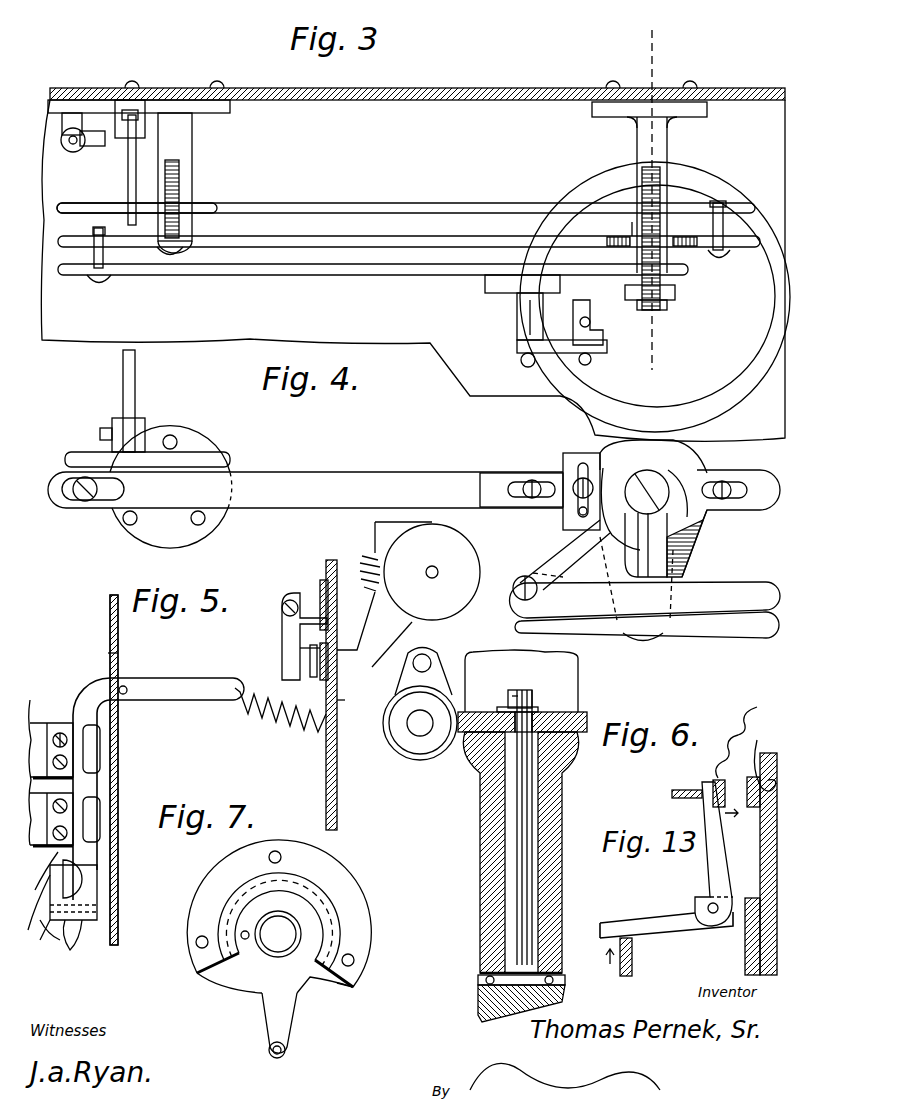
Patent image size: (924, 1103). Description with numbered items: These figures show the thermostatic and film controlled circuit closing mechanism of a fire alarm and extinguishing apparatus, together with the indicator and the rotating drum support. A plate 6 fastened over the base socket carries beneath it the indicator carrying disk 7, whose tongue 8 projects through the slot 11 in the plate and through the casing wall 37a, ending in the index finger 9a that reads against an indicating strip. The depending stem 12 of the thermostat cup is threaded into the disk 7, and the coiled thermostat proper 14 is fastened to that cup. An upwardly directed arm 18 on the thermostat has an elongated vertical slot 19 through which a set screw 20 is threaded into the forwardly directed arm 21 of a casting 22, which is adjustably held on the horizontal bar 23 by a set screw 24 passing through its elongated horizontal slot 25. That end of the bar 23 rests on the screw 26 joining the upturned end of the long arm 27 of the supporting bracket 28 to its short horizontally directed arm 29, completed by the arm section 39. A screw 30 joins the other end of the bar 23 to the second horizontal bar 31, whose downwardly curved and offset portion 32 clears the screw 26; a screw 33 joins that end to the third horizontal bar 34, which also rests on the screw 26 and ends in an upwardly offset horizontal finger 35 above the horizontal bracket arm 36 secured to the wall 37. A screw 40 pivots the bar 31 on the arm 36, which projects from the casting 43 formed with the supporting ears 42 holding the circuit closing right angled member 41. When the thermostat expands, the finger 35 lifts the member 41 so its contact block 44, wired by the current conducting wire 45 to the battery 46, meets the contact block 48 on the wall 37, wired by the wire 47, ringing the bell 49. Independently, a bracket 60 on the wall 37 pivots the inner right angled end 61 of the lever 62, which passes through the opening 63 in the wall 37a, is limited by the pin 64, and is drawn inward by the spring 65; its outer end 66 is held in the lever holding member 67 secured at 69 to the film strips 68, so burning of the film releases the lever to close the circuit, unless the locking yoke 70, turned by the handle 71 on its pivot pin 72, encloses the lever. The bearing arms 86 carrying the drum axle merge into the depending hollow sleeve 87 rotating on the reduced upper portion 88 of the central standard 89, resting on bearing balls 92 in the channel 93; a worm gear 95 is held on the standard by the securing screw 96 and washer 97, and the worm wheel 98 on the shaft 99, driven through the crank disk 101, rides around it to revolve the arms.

In FIG. 7, the plate 6 is at (230, 865).
In FIG. 7, the indicator carrying disk 7 is at (243, 905).
In FIG. 7, the tongue 8 is at (277, 1010).
In FIG. 7, the index finger 9a is at (283, 1058).
In FIG. 7, the slot 11 is at (340, 983).
In FIG. 3, the depending stem 12 is at (653, 203).
In FIG. 3, the thermostat proper 14 is at (722, 402).
In FIG. 4, the thermostat proper 14 is at (700, 596).
In FIG. 3, the upwardly directed arm 18 is at (592, 362).
In FIG. 4, the upwardly directed arm 18 is at (548, 560).
In FIG. 4, the elongated vertical slot 19 is at (581, 515).
In FIG. 3, the set screw 20 is at (528, 367).
In FIG. 4, the set screw 20 is at (575, 497).
In FIG. 3, the forwardly directed arm 21 is at (517, 345).
In FIG. 3, the casting 22 is at (487, 285).
In FIG. 4, the casting 22 is at (495, 482).
In FIG. 3, the horizontal bar 23 is at (284, 276).
In FIG. 4, the horizontal bar 23 is at (298, 482).
In FIG. 3, the set screw 24 is at (518, 318).
In FIG. 4, the set screw 24 is at (537, 479).
In FIG. 4, the elongated horizontal slot 25 is at (528, 499).
In FIG. 3, the screw 26 is at (660, 232).
In FIG. 3, the arm 27 is at (645, 308).
In FIG. 4, the arm 27 is at (644, 478).
In FIG. 3, the supporting bracket 28 is at (704, 117).
In FIG. 4, the supporting bracket 28 is at (605, 446).
In FIG. 3, the short horizontally directed arm 29 is at (637, 140).
In FIG. 3, the screw 30 is at (92, 278).
In FIG. 4, the screw 30 is at (88, 501).
In FIG. 3, the second horizontal bar 31 is at (282, 240).
In FIG. 3, the downwardly curved and offset portion 32 is at (680, 285).
In FIG. 4, the downwardly curved and offset portion 32 is at (690, 515).
In FIG. 3, the screw 33 is at (719, 262).
In FIG. 4, the screw 33 is at (724, 480).
In FIG. 3, the third horizontal bar 34 is at (400, 210).
In FIG. 3, the upwardly offset horizontal finger 35 is at (197, 206).
In FIG. 4, the upwardly offset horizontal finger 35 is at (218, 455).
In FIG. 13, the upwardly offset horizontal finger 35 is at (633, 950).
In FIG. 3, the horizontal bracket arm 36 is at (180, 154).
In FIG. 3, the wall 37 is at (417, 83).
In FIG. 5, the wall 37 is at (337, 802).
In FIG. 13, the wall 37 is at (780, 864).
In FIG. 5, the wall 37a is at (118, 774).
In FIG. 3, the arm section 39 is at (632, 232).
In FIG. 3, the screw 40 is at (181, 258).
In FIG. 3, the circuit closing right angled member 41 is at (128, 172).
In FIG. 4, the circuit closing right angled member 41 is at (123, 393).
In FIG. 5, the circuit closing right angled member 41 is at (310, 665).
In FIG. 13, the circuit closing right angled member 41 is at (698, 898).
In FIG. 4, the supporting ears 42 is at (112, 421).
In FIG. 3, the casting 43 is at (196, 84).
In FIG. 4, the casting 43 is at (192, 440).
In FIG. 13, the casting 43 is at (745, 961).
In FIG. 3, the contact block 44 is at (118, 96).
In FIG. 5, the contact block 44 is at (320, 604).
In FIG. 13, the contact block 44 is at (714, 782).
In FIG. 5, the current conducting wire 45 is at (388, 644).
In FIG. 13, the current conducting wire 45 is at (743, 730).
In FIG. 5, the battery 46 is at (368, 562).
In FIG. 5, the current conducting wire 47 is at (372, 668).
In FIG. 13, the current conducting wire 47 is at (762, 820).
In FIG. 5, the contact block 48 is at (344, 702).
In FIG. 13, the contact block 48 is at (771, 751).
In FIG. 5, the bell 49 is at (432, 572).
In FIG. 5, the bracket 60 is at (292, 592).
In FIG. 3, the inner right angled end 61 is at (80, 148).
In FIG. 5, the inner right angled end 61 is at (300, 648).
In FIG. 13, the inner right angled end 61 is at (672, 793).
In FIG. 5, the lever 62 is at (210, 678).
In FIG. 5, the opening 63 is at (108, 653).
In FIG. 5, the pin 64 is at (127, 687).
In FIG. 5, the spring 65 is at (276, 712).
In FIG. 5, the outer end 66 is at (55, 885).
In FIG. 5, the lever holding member 67 is at (100, 744).
In FIG. 5, the film strips 68 is at (47, 723).
In FIG. 5, the securing point 69 is at (60, 737).
In FIG. 5, the locking yoke 70 is at (50, 925).
In FIG. 5, the handle 71 is at (70, 948).
In FIG. 5, the pivot pin 72 is at (42, 940).
In FIG. 6, the bearing arms 86 is at (521, 681).
In FIG. 6, the depending hollow sleeve 87 is at (566, 832).
In FIG. 6, the reduced upper portion 88 is at (520, 878).
In FIG. 6, the central standard 89 is at (480, 1013).
In FIG. 6, the bearing balls 92 is at (492, 972).
In FIG. 6, the channel 93 is at (478, 980).
In FIG. 6, the worm gear 95 is at (576, 712).
In FIG. 6, the securing screw 96 is at (523, 690).
In FIG. 6, the washer 97 is at (548, 690).
In FIG. 5, the worm wheel 98 is at (402, 708).
In FIG. 5, the shaft 99 is at (420, 728).
In FIG. 5, the crank disk 101 is at (430, 666).